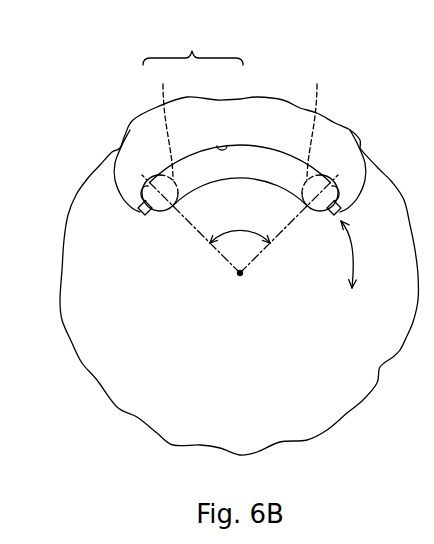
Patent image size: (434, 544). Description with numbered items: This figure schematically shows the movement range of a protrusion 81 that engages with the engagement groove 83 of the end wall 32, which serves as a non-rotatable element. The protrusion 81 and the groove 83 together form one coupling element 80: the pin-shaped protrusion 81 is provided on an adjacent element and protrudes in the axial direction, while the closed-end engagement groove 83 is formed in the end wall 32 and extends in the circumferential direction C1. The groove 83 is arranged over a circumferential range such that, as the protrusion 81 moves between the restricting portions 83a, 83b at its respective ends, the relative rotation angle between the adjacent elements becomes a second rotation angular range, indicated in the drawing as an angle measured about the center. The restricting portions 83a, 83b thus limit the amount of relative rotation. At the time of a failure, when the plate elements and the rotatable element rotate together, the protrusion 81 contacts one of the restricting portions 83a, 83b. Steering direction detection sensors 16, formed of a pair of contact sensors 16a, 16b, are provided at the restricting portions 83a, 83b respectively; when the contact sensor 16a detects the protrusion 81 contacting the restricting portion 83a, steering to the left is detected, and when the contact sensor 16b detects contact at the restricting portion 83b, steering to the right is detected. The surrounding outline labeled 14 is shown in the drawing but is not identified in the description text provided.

The body 14 is at (339, 103).
The steering direction detection sensor 16 is at (141, 216).
The contact sensor 16a is at (143, 204).
The contact sensor 16b is at (340, 196).
The end wall 32 is at (258, 116).
The coupling element 80 is at (193, 43).
The protrusion 81 is at (238, 127).
The engagement groove 83 is at (222, 146).
The restricting portion 83a is at (146, 186).
The restricting portion 83b is at (336, 188).
The circumferential direction C1 is at (360, 255).